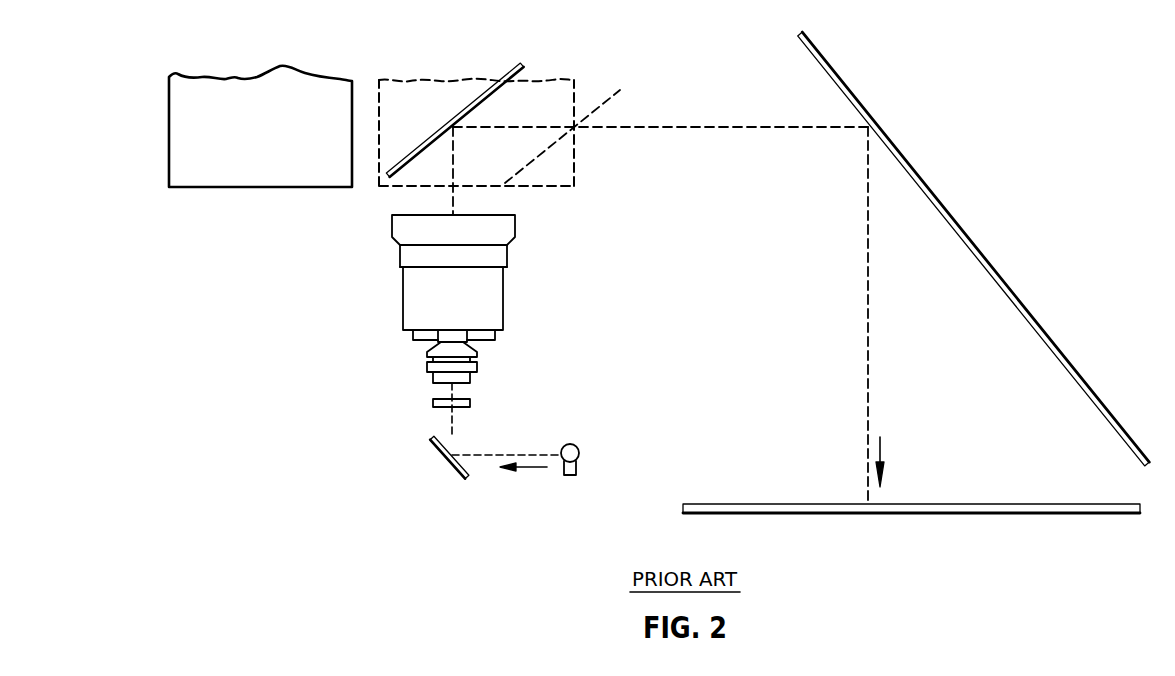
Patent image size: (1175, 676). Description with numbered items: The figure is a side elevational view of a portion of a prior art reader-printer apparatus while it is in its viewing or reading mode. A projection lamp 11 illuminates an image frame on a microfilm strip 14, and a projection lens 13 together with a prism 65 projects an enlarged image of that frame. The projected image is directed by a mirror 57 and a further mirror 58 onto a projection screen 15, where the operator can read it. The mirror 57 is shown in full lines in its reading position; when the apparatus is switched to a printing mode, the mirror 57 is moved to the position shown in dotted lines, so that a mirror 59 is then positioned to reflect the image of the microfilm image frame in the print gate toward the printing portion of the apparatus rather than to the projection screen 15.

The projection lamp 11 is at (579, 446).
The projection lens 13 is at (427, 366).
The microfilm strip 14 is at (470, 403).
The projection screen 15 is at (1031, 492).
The mirror 57 is at (516, 80).
The mirror 58 is at (822, 62).
The mirror 59 is at (265, 178).
The prism 65 is at (495, 295).